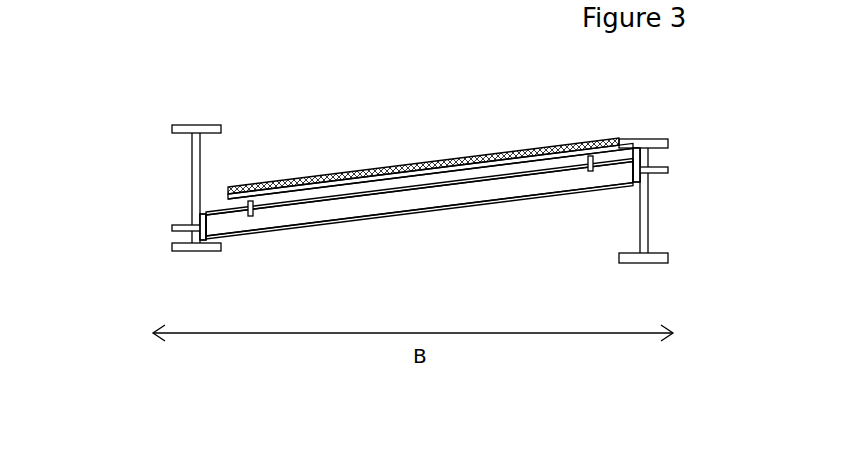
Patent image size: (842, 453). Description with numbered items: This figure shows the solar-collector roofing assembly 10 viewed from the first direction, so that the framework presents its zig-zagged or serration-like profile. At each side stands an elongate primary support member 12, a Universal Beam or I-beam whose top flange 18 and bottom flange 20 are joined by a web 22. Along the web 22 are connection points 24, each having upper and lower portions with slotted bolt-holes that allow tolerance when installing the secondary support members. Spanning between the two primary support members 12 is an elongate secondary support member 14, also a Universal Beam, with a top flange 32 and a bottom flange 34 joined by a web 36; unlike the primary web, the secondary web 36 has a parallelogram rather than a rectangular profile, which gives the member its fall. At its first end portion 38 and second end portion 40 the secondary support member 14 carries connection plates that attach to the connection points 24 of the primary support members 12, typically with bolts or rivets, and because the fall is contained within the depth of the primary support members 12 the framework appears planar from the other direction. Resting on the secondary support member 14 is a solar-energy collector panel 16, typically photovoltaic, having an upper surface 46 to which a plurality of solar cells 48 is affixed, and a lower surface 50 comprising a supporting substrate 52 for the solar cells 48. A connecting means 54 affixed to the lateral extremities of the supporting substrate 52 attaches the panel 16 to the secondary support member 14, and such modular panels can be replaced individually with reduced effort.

The solar-collector roofing assembly 10 is at (140, 142).
The primary support member 12 is at (206, 118).
The secondary support member 14 is at (478, 207).
The solar-energy collector panel 16 is at (442, 138).
The top flange 18 is at (190, 124).
The bottom flange 20 is at (198, 253).
The web 22 is at (190, 188).
The connection point 24 is at (197, 215).
The top flange 32 is at (349, 197).
The bottom flange 34 is at (313, 227).
The web 36 is at (339, 210).
The first end portion 38 is at (628, 178).
The second end portion 40 is at (223, 236).
The upper surface 46 is at (383, 167).
The solar cells 48 is at (338, 173).
The lower surface 50 is at (397, 187).
The supporting substrate 52 is at (432, 175).
The connecting means 54 is at (252, 219).